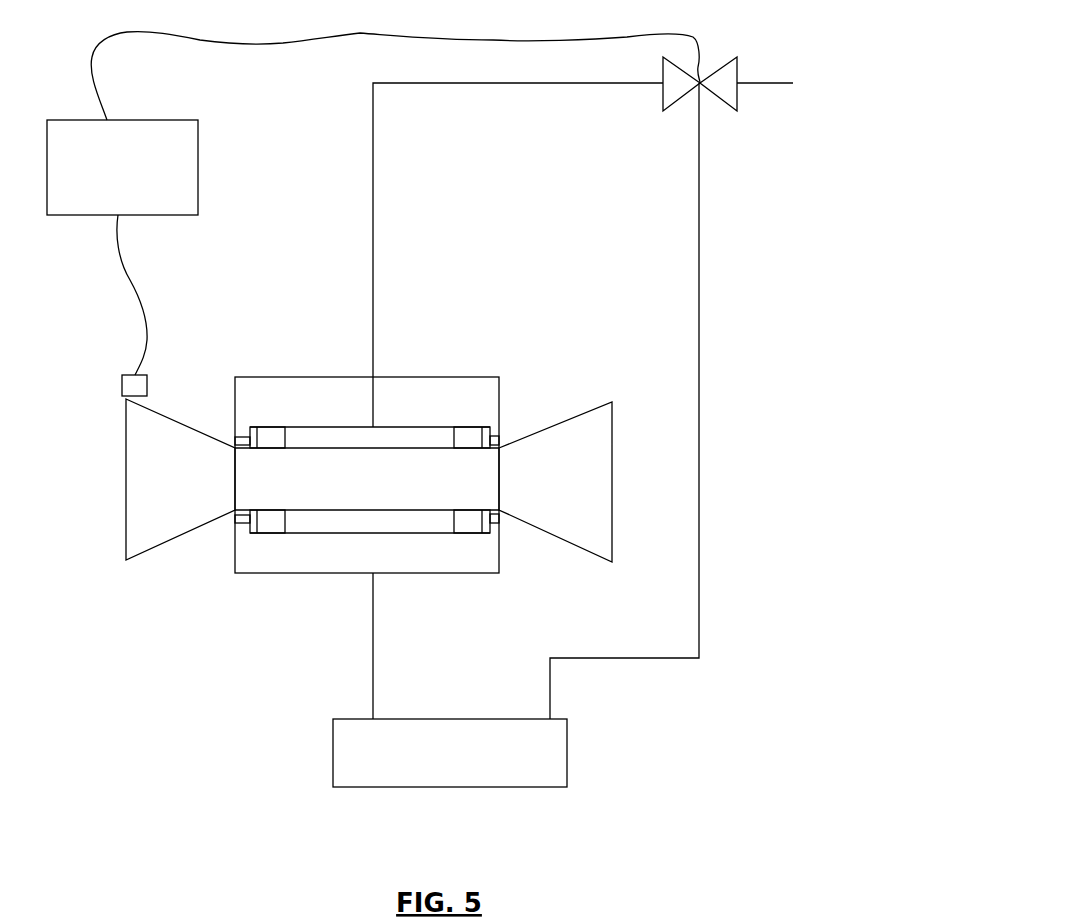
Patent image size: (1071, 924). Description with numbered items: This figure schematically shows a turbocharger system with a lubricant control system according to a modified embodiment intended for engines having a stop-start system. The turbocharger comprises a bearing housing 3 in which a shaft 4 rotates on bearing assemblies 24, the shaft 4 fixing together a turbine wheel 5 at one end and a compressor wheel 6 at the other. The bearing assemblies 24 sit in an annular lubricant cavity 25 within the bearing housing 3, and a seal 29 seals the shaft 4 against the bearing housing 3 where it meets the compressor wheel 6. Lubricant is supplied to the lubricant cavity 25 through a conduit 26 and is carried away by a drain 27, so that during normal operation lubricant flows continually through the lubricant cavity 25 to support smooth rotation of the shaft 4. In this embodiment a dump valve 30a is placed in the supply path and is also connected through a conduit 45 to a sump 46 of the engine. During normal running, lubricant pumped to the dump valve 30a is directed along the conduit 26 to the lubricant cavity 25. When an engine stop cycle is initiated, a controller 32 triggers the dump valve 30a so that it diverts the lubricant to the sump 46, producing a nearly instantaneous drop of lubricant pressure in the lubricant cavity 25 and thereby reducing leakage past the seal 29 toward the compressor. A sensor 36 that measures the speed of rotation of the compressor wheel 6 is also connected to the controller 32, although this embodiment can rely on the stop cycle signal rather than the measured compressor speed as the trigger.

The bearing housing 3 is at (466, 400).
The shaft 4 is at (332, 473).
The turbine wheel 5 is at (570, 470).
The compressor wheel 6 is at (148, 482).
The bearing assemblies 24 is at (272, 438).
The lubricant cavity 25 is at (403, 525).
The conduit 26 is at (373, 137).
The drain 27 is at (373, 652).
The seal 29 is at (237, 441).
The dump valve 30a is at (713, 87).
The controller 32 is at (373, 203).
The sensor 36 is at (122, 383).
The conduit 45 is at (699, 343).
The sump 46 is at (450, 753).